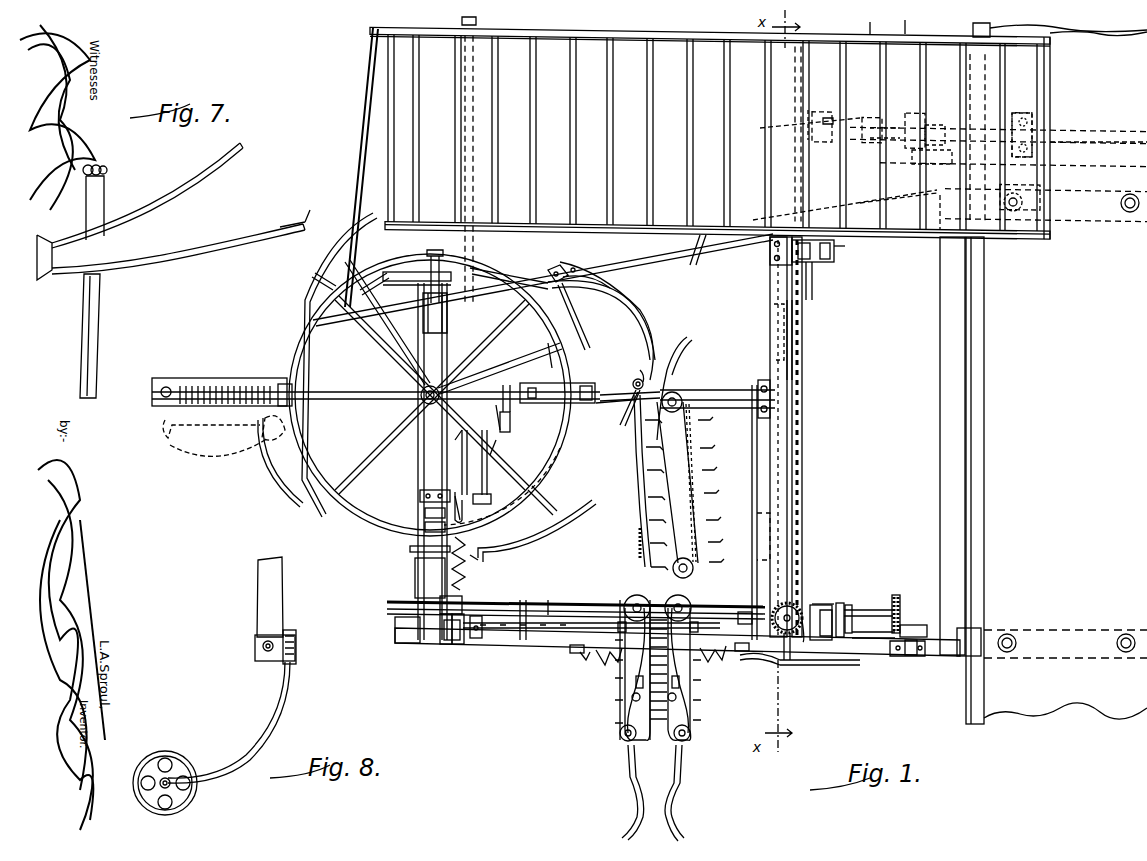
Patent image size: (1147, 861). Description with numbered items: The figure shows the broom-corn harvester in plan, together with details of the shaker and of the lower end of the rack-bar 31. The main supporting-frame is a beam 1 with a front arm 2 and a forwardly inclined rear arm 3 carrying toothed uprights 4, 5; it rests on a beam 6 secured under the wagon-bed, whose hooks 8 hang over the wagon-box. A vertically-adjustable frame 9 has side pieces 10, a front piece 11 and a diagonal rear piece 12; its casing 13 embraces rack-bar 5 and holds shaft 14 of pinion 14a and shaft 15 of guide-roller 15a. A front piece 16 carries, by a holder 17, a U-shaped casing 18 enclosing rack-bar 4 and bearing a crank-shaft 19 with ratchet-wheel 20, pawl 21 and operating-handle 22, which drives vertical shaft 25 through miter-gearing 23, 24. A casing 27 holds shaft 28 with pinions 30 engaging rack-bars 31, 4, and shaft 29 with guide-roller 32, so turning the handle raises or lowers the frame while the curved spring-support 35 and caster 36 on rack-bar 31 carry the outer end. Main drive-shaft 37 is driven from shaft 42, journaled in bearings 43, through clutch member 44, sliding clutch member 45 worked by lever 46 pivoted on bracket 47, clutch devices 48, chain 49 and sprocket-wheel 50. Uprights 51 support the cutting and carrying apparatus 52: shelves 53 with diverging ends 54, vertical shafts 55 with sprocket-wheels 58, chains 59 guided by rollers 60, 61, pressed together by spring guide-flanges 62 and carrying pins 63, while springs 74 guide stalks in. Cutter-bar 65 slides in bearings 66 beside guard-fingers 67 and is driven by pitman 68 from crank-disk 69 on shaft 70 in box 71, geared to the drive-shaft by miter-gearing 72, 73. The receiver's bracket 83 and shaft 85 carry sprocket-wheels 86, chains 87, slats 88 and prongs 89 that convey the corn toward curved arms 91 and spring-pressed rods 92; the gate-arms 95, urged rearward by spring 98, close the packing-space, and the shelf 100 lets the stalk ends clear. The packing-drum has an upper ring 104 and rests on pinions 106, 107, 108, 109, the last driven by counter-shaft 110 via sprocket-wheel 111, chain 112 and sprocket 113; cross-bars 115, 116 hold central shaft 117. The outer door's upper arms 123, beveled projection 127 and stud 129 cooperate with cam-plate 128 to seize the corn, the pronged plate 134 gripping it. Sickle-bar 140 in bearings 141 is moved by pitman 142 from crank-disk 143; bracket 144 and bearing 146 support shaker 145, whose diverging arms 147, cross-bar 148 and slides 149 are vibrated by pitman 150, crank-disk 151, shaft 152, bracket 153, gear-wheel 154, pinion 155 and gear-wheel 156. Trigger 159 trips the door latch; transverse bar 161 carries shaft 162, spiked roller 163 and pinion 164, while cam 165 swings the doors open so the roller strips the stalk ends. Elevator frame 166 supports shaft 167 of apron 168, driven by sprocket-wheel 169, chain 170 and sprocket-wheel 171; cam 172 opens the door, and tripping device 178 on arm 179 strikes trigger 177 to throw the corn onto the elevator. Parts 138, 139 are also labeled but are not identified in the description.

In FIG. 1, the beam 1 is at (940, 349).
In FIG. 1, the front arm or bracket 2 is at (940, 598).
In FIG. 1, the rear arm or bracket 3 is at (856, 202).
In FIG. 1, the rack-bar upright 4 is at (826, 605).
In FIG. 1, the rack-bar upright 5 is at (812, 270).
In FIG. 1, the supporting beam 6 is at (1146, 612).
In FIG. 1, the hooks 8 is at (978, 632).
In FIG. 1, the vertically-adjustable frame 9 is at (765, 540).
In FIG. 1, the side pieces 10 is at (778, 340).
In FIG. 1, the front piece 11 is at (570, 600).
In FIG. 1, the diagonal rear piece 12 is at (603, 265).
In FIG. 1, the casing 13 is at (760, 128).
In FIG. 1, the pinion shaft 14 is at (800, 338).
In FIG. 1, the pinion 14a is at (772, 262).
In FIG. 1, the guide-roller shaft 15 is at (828, 262).
In FIG. 1, the guide-roller 15a is at (836, 250).
In FIG. 1, the front piece 16 is at (405, 645).
In FIG. 1, the holder 17 is at (818, 646).
In FIG. 1, the vertical casing 18 is at (830, 645).
In FIG. 1, the crank-shaft 19 is at (838, 604).
In FIG. 1, the ratchet-wheel 20 is at (846, 612).
In FIG. 1, the pawl 21 is at (850, 612).
In FIG. 1, the operating-handle 22 is at (862, 636).
In FIG. 1, the miter-gear 23 is at (814, 605).
In FIG. 1, the miter-gear 24 is at (784, 602).
In FIG. 1, the vertical shaft 25 is at (782, 633).
In FIG. 1, the casing 27 is at (492, 650).
In FIG. 1, the pinion shaft 28 is at (532, 600).
In FIG. 1, the guide-roller shaft 29 is at (438, 645).
In FIG. 1, the pinions 30 is at (455, 615).
In FIG. 8, the rack-bar 31 is at (278, 585).
In FIG. 1, the rack-bar 31 is at (455, 650).
In FIG. 1, the guide-roller 32 is at (450, 648).
In FIG. 8, the curved spring-support 35 is at (288, 704).
In FIG. 8, the wheel or caster 36 is at (176, 756).
In FIG. 1, the main drive-shaft 37 is at (552, 600).
In FIG. 1, the shaft 42 is at (1118, 132).
In FIG. 1, the bearings 43 is at (1035, 126).
In FIG. 1, the clutch member 44 is at (812, 110).
In FIG. 1, the sliding clutch member 45 is at (828, 125).
In FIG. 1, the lever 46 is at (895, 120).
In FIG. 1, the arm or bracket 47 is at (932, 125).
In FIG. 1, the clutch devices 48 is at (922, 150).
In FIG. 1, the chain 49 is at (802, 470).
In FIG. 1, the sprocket-wheel 50 is at (796, 580).
In FIG. 1, the uprights 51 is at (620, 628).
In FIG. 1, the cutting and carrying apparatus 52 is at (694, 700).
In FIG. 1, the horizontal shelves 53 is at (630, 715).
In FIG. 1, the diverging front ends 54 is at (660, 679).
In FIG. 1, the vertical shafts 55 is at (632, 600).
In FIG. 1, the sprocket-wheels 58 is at (624, 605).
In FIG. 1, the chains 59 is at (618, 710).
In FIG. 1, the guide-rollers 60 is at (622, 738).
In FIG. 1, the guide-rollers 61 is at (688, 738).
In FIG. 1, the guide-flanges 62 is at (636, 660).
In FIG. 1, the pins or studs 63 is at (694, 684).
In FIG. 1, the cutter-bar 65 is at (612, 655).
In FIG. 1, the bearings 66 is at (572, 656).
In FIG. 1, the guard-fingers 67 is at (580, 690).
In FIG. 1, the pitman 68 is at (868, 662).
In FIG. 1, the crank-disk 69 is at (902, 660).
In FIG. 1, the shaft 70 is at (905, 623).
In FIG. 1, the box 71 is at (912, 656).
In FIG. 1, the miter-gear 72 is at (920, 650).
In FIG. 1, the miter-gear 73 is at (893, 597).
In FIG. 1, the springs 74 is at (625, 780).
In FIG. 1, the bracket 83 is at (676, 392).
In FIG. 1, the vertical shaft 85 is at (680, 392).
In FIG. 1, the sprocket-wheels 86 is at (700, 430).
In FIG. 1, the chains 87 is at (700, 454).
In FIG. 1, the slats 88 is at (700, 545).
In FIG. 1, the prongs 89 is at (700, 496).
In FIG. 1, the arms 91 is at (632, 384).
In FIG. 1, the rods 92 is at (630, 412).
In FIG. 1, the gate-arms 95 is at (640, 452).
In FIG. 1, the spring 98 is at (640, 545).
In FIG. 1, the shelf 100 is at (642, 368).
In FIG. 1, the upper ring 104 is at (300, 328).
In FIG. 1, the pinion 106 is at (410, 562).
In FIG. 1, the pinion 107 is at (288, 380).
In FIG. 1, the pinion 108 is at (560, 155).
In FIG. 1, the pinion 109 is at (610, 425).
In FIG. 1, the counter-shaft 110 is at (736, 392).
In FIG. 1, the sprocket-wheel 111 is at (777, 382).
In FIG. 1, the chain 112 is at (752, 492).
In FIG. 1, the sprocket 113 is at (745, 622).
In FIG. 1, the radial cross-bar 115 is at (330, 358).
In FIG. 1, the radial cross-bar 116 is at (494, 340).
In FIG. 1, the central vertical shaft 117 is at (418, 395).
In FIG. 1, the upper door arms 123 is at (615, 306).
In FIG. 1, the beveled projection 127 is at (606, 290).
In FIG. 1, the cam-plate 128 is at (636, 360).
In FIG. 1, the stud 129 is at (650, 330).
In FIG. 1, the depending plate 134 is at (542, 355).
In FIG. 1, the bar 138 is at (558, 485).
In FIG. 1, the link 139 is at (540, 356).
In FIG. 1, the sickle-bar 140 is at (450, 560).
In FIG. 1, the bearings 141 is at (430, 513).
In FIG. 1, the pitman 142 is at (458, 490).
In FIG. 1, the crank-disk 143 is at (450, 408).
In FIG. 1, the bracket 144 is at (460, 492).
In FIG. 7, the shaker 145 is at (215, 178).
In FIG. 1, the shaker 145 is at (592, 505).
In FIG. 1, the bearing 146 is at (498, 630).
In FIG. 7, the diverging arms 147 is at (198, 240).
In FIG. 1, the diverging arms 147 is at (505, 520).
In FIG. 7, the cross-bar 148 is at (40, 283).
In FIG. 7, the slide 149 is at (100, 206).
In FIG. 1, the pitman 150 is at (505, 458).
In FIG. 1, the crank-disk 151 is at (470, 462).
In FIG. 1, the shaft 152 is at (500, 446).
In FIG. 1, the bracket 153 is at (505, 422).
In FIG. 1, the gear-wheel 154 is at (507, 432).
In FIG. 1, the intermediate pinion 155 is at (557, 385).
In FIG. 1, the gear-wheel 156 is at (511, 388).
In FIG. 1, the trigger 159 is at (370, 522).
In FIG. 1, the transverse bar 161 is at (372, 395).
In FIG. 1, the shaft 162 is at (176, 385).
In FIG. 1, the spiked roller 163 is at (205, 385).
In FIG. 1, the pinion 164 is at (227, 432).
In FIG. 1, the cam 165 is at (280, 478).
In FIG. 1, the elevator frame 166 is at (703, 265).
In FIG. 1, the shaft 167 is at (398, 228).
In FIG. 1, the apron or endless carrier 168 is at (388, 462).
In FIG. 1, the sprocket-wheel 169 is at (370, 268).
In FIG. 1, the chain 170 is at (406, 270).
In FIG. 1, the sprocket-wheel 171 is at (463, 268).
In FIG. 1, the cam 172 is at (316, 232).
In FIG. 1, the trigger 177 is at (575, 300).
In FIG. 1, the tripping device 178 is at (352, 328).
In FIG. 1, the arm 179 is at (395, 378).